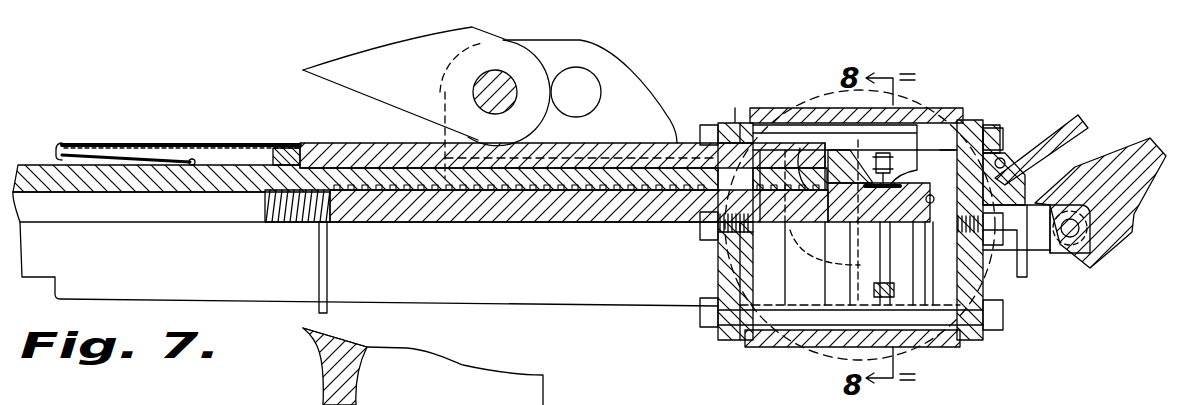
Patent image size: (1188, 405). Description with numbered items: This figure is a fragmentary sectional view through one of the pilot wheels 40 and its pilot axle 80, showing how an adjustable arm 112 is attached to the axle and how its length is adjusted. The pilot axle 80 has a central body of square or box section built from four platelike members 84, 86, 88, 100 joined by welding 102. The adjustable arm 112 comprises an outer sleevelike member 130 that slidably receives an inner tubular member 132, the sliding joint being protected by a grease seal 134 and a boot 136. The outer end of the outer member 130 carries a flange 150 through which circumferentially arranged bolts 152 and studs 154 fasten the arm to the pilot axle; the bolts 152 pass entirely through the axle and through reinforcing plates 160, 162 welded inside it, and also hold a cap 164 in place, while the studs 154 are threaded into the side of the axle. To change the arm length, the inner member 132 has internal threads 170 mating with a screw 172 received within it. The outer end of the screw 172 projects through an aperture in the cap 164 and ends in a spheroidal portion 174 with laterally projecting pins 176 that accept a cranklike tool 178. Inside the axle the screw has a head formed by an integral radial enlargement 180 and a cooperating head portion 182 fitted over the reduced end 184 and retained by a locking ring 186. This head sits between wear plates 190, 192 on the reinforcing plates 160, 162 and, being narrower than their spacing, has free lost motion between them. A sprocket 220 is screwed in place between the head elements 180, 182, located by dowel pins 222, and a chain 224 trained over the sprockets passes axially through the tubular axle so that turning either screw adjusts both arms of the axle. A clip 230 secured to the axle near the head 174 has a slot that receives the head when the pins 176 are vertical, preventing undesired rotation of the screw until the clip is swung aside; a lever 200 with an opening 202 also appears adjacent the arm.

The pilot wheels 40 is at (350, 378).
The pilot axle 80 is at (966, 108).
The platelike member 84 is at (770, 107).
The platelike member 86 is at (950, 343).
The platelike member 88 is at (738, 120).
The platelike member 100 is at (985, 297).
The welding 102 is at (985, 124).
The adjustable arm 112 is at (378, 128).
The outer sleevelike member 130 is at (590, 142).
The inner tubular member 132 is at (80, 165).
The grease seal 134 is at (290, 156).
The boot 136 is at (186, 143).
The flange 150 is at (716, 128).
The bolts 152 is at (690, 130).
The studs 154 is at (700, 228).
The reinforcing plate 160 is at (748, 255).
The reinforcing plate 162 is at (993, 179).
The cap 164 is at (1010, 180).
The internal threads 170 is at (312, 178).
The screw 172 is at (318, 215).
The spheroidal portion 174 is at (1075, 256).
The pins 176 is at (1082, 246).
The cranklike tool 178 is at (1147, 135).
The radial enlargement 180 is at (830, 148).
The head portion 182 is at (907, 162).
The reduced end 184 is at (928, 196).
The locking ring 186 is at (926, 200).
The wear plate 190 is at (805, 146).
The wear plate 192 is at (937, 142).
The lever 200 is at (595, 62).
The pivot hole 202 is at (471, 84).
The sprocket 220 is at (845, 270).
The dowel pins 222 is at (879, 202).
The chain 224 is at (888, 297).
The clips 230 is at (1075, 118).